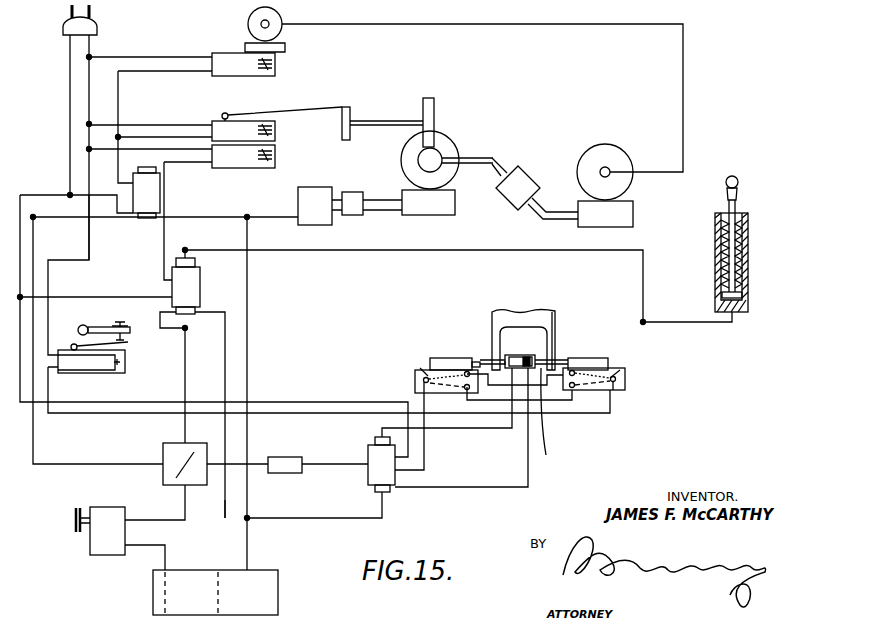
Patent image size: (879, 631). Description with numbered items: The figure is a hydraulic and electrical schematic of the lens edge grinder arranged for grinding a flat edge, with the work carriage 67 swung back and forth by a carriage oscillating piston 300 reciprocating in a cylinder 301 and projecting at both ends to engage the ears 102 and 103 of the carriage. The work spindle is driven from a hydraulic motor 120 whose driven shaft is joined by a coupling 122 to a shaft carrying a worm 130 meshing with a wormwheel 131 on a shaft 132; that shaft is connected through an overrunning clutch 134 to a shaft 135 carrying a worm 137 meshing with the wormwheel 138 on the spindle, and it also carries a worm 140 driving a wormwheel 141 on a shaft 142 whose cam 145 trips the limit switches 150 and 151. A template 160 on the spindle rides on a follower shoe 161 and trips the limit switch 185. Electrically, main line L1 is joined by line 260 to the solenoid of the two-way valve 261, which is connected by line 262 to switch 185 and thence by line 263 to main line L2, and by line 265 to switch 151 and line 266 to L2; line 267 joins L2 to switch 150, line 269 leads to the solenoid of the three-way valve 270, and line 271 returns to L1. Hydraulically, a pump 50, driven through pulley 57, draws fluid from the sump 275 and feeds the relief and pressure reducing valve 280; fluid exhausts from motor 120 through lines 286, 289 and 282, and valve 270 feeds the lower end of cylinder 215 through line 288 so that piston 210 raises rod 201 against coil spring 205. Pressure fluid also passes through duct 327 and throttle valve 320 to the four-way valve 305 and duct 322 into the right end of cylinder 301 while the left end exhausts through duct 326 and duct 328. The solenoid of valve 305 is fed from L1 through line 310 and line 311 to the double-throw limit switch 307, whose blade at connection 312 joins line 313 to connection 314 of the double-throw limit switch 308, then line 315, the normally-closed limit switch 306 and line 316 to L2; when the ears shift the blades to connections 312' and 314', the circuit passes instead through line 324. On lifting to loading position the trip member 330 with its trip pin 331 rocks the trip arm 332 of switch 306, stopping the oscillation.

The main line L1 is at (68, 43).
The main line L2 is at (91, 43).
The template 160 is at (253, 16).
The follower shoe 161 is at (283, 47).
The limit switch 185 is at (275, 64).
The line 263 is at (155, 57).
The line 262 is at (150, 71).
The line 267 is at (134, 144).
The line 265 is at (170, 135).
The line 266 is at (216, 118).
The limit switch 151 is at (275, 131).
The limit switch 150 is at (240, 168).
The line 269 is at (172, 165).
The two-way solenoid-operated valve 261 is at (150, 188).
The line 260 is at (214, 326).
The line 316 is at (58, 262).
The line 271 is at (80, 297).
The three-way solenoid operated valve 270 is at (200, 290).
The line 286 is at (249, 290).
The line 288 is at (555, 252).
The trip member 330 is at (101, 327).
The trip pin 331 is at (125, 338).
The trip arm 332 is at (128, 346).
The limit switch 306 is at (95, 373).
The line 310 is at (44, 415).
The line 315 is at (96, 416).
The hydraulic pump 50 is at (112, 508).
The pulley 57 is at (74, 522).
The relief and pressure reducing valve 280 is at (178, 478).
The line 289 is at (222, 513).
The line 282 is at (249, 540).
The sump 275 is at (278, 586).
The duct 327 is at (255, 462).
The throttle valve 320 is at (292, 457).
The four-way valve 305 is at (368, 452).
The line 311 is at (410, 456).
The duct 322 is at (459, 489).
The duct 328 is at (336, 520).
The duct 326 is at (470, 430).
The line 324 is at (554, 423).
The line 313 is at (545, 405).
The switch blade connection 312 is at (493, 392).
The switch blade connection 312' is at (408, 361).
The switch blade connection 314 is at (594, 391).
The switch blade connection 314' is at (637, 362).
The double-throw limit switch 308 is at (596, 358).
The double-throw limit switch 307 is at (434, 358).
The ear 102 is at (556, 344).
The carriage 67 is at (517, 312).
The carriage oscillating piston 300 is at (521, 356).
The cylinder 301 is at (505, 355).
The ear 103 is at (488, 358).
The hydraulic motor 120 is at (298, 198).
The coupling 122 is at (353, 215).
The worm 130 is at (433, 215).
The wormwheel 131 is at (401, 160).
The worm 140 is at (462, 152).
The wormwheel 141 is at (434, 106).
The shaft 142 is at (388, 114).
The cam 145 is at (342, 132).
The shaft 132 is at (500, 165).
The overrunning clutch 134 is at (523, 195).
The shaft 135 is at (542, 220).
The worm 137 is at (625, 226).
The wormwheel 138 is at (602, 150).
The rod 201 is at (738, 180).
The cylinder 215 is at (749, 230).
The coil spring 205 is at (743, 258).
The piston 210 is at (743, 295).